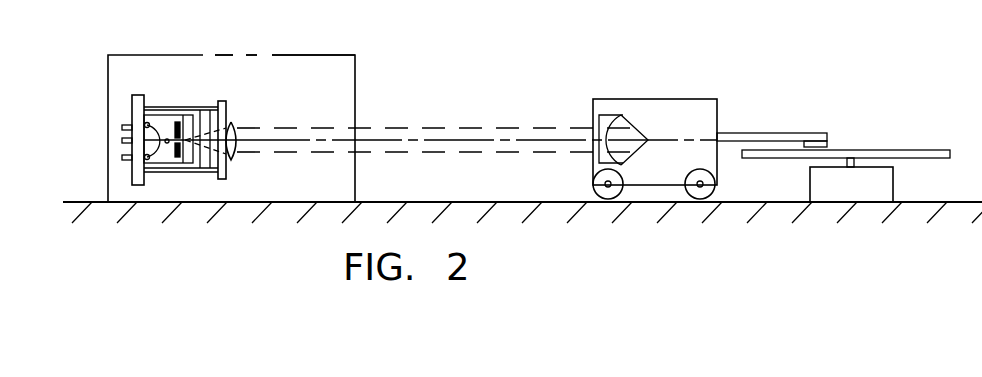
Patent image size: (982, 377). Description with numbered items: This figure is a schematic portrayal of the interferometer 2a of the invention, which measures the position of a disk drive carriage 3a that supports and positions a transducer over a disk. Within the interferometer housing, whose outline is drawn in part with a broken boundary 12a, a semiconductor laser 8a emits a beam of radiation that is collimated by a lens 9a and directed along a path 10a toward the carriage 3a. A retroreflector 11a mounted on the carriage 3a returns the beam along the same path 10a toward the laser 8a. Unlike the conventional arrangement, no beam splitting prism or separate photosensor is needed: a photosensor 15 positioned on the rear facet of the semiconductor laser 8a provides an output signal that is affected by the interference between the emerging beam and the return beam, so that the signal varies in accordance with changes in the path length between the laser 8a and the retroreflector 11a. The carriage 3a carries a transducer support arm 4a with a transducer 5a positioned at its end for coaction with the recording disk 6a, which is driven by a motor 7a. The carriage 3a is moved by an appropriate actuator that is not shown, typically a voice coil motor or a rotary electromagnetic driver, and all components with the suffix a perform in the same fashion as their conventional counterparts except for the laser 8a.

The interferometer 2a is at (108, 90).
The housing boundary 12a is at (335, 54).
The semiconductor laser 8a is at (176, 124).
The photosensor 15 is at (178, 139).
The lens 9a is at (236, 126).
The path 10a is at (382, 128).
The carriage 3a is at (652, 99).
The retroreflector 11a is at (642, 145).
The transducer support arm 4a is at (775, 133).
The transducer 5a is at (827, 143).
The recording disk 6a is at (912, 150).
The motor 7a is at (893, 183).